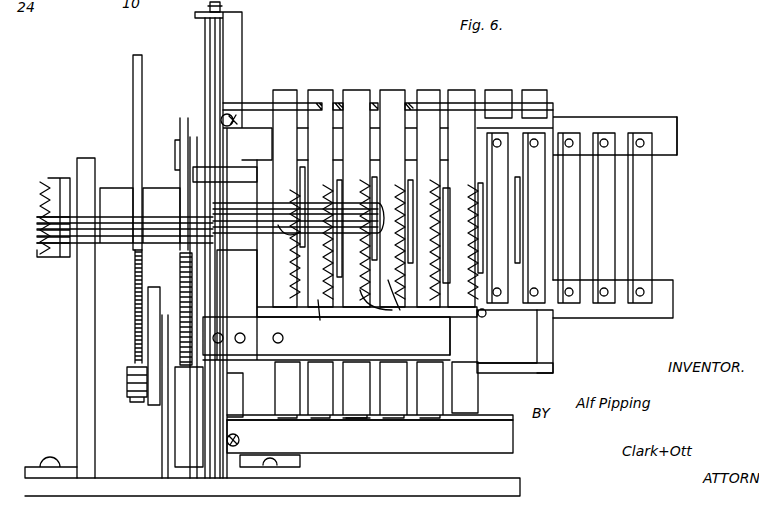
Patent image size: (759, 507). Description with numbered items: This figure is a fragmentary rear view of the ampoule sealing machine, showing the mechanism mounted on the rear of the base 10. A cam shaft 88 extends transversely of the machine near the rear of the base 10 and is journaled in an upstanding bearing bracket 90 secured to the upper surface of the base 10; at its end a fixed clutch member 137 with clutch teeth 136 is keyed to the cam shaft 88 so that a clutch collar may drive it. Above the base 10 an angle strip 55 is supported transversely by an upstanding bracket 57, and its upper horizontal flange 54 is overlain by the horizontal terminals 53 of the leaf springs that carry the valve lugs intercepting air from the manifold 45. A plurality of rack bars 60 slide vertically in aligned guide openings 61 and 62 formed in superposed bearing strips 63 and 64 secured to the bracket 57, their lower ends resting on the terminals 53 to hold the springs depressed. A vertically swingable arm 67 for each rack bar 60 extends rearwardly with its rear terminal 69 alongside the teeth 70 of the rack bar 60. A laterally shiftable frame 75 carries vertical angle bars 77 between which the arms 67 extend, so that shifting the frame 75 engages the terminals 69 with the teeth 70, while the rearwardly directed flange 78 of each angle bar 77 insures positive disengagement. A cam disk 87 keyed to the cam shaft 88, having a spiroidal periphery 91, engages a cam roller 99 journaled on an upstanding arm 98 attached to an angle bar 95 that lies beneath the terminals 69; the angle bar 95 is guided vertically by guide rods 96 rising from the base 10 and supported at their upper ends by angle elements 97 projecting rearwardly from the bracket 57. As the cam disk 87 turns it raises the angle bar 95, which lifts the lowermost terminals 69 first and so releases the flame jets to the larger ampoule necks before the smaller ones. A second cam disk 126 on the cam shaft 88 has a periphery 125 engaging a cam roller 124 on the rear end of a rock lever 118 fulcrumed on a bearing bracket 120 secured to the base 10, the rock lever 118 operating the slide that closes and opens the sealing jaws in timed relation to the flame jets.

The base 10 is at (68, 470).
The manifold 45 is at (555, 336).
The horizontal terminal 53 is at (326, 420).
The upper horizontal flange 54 is at (350, 420).
The angle strip 55 is at (423, 443).
The upstanding bracket 57 is at (243, 52).
The rack bar 60 is at (318, 92).
The guide opening 61 is at (345, 100).
The guide opening 62 is at (482, 315).
The bearing strip 63 is at (462, 98).
The bearing strip 64 is at (288, 315).
The vertically swingable arm 67 is at (302, 190).
The rear terminal 69 is at (302, 240).
The teeth 70 is at (283, 240).
The frame 75 is at (642, 120).
The angle bar 77 is at (490, 158).
The rearwardly directed flange 78 is at (508, 172).
The cam disk 87 is at (180, 192).
The cam shaft 88 is at (243, 234).
The bearing bracket 90 is at (82, 373).
The spiroidal periphery 91 is at (185, 118).
The angle bar 95 is at (400, 355).
The guide rods 96 is at (204, 52).
The angle element 97 is at (222, 24).
The upstanding arm 98 is at (230, 283).
The cam roller 99 is at (176, 150).
The rock lever 118 is at (152, 323).
The bearing bracket 120 is at (165, 440).
The cam roller 124 is at (136, 400).
The periphery 125 is at (134, 282).
The cam disk 126 is at (132, 120).
The clutch teeth 136 is at (40, 182).
The fixed clutch member 137 is at (55, 258).